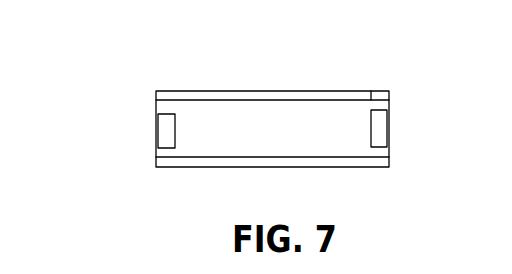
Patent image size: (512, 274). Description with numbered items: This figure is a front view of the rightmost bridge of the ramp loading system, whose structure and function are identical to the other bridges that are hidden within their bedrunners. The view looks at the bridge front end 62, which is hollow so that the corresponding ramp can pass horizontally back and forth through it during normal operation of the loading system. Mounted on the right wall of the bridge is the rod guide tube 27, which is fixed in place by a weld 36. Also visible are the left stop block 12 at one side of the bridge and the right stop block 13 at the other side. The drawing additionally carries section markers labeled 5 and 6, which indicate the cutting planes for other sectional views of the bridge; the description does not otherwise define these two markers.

The weld 36 is at (158, 131).
The rod guide tube 27 is at (372, 94).
The bridge front end 62 is at (330, 137).
The right stop block 13 is at (389, 113).
The left stop block 12 is at (165, 150).
The section line 5 is at (275, 129).
The section line 6 is at (207, 188).